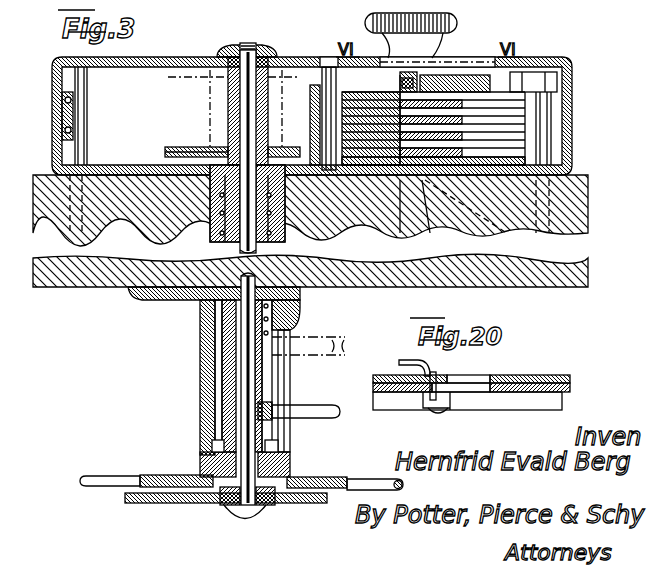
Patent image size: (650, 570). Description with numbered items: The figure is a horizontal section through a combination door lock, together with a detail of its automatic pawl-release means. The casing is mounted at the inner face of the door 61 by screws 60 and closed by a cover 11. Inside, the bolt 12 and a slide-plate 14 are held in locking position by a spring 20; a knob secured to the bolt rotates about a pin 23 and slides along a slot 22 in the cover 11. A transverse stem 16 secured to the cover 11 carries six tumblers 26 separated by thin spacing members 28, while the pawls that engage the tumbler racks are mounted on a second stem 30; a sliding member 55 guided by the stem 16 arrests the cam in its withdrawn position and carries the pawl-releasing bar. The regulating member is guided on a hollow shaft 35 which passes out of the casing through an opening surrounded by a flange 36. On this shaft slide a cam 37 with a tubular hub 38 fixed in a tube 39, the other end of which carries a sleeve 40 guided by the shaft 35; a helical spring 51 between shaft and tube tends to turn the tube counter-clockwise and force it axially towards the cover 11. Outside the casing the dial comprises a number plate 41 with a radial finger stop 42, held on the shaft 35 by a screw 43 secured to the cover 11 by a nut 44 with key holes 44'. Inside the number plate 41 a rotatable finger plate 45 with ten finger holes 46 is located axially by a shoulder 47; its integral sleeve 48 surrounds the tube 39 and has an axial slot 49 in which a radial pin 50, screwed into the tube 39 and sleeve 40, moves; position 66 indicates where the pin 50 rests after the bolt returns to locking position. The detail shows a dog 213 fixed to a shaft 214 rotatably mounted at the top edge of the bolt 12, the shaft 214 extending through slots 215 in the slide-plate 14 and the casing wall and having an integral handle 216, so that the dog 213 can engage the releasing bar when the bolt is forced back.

In FIG. 3, the door 61 is at (50, 175).
In FIG. 3, the screws 60 is at (86, 96).
In FIG. 3, the spring 20 is at (528, 82).
In FIG. 3, the slot 22 is at (470, 66).
In FIG. 3, the pin 23 is at (418, 72).
In FIG. 3, the stem 16 is at (326, 70).
In FIG. 3, the flange 36 is at (271, 212).
In FIG. 3, the shaft 35 is at (228, 99).
In FIG. 3, the key holes 44' is at (247, 36).
In FIG. 3, the nut 44 is at (269, 41).
In FIG. 3, the cam 37 is at (182, 147).
In FIG. 3, the tubular hub 38 is at (175, 157).
In FIG. 3, the spacing members 28 is at (402, 219).
In FIG. 3, the tumblers 26 is at (430, 233).
In FIG. 3, the sliding member 55 is at (467, 230).
In FIG. 3, the stem 30 is at (526, 219).
In FIG. 3, the sleeve 48 is at (205, 350).
In FIG. 3, the helical spring 51 is at (290, 311).
In FIG. 3, the tube 39 is at (207, 368).
In FIG. 3, the screw 43 is at (222, 392).
In FIG. 3, the sleeve 40 is at (213, 420).
In FIG. 3, the axial slot 49 is at (290, 375).
In FIG. 3, the pin position 66 is at (341, 346).
In FIG. 3, the pin 50 is at (318, 410).
In FIG. 3, the shoulder 47 is at (279, 430).
In FIG. 3, the rotatable plate 45 is at (165, 475).
In FIG. 3, the finger stop 42 is at (140, 480).
In FIG. 3, the finger holes 46 is at (364, 478).
In FIG. 3, the circular plate 41 is at (306, 493).
In FIG. 20, the cover 11 is at (505, 385).
In FIG. 20, the slide-plate 14 is at (504, 396).
In FIG. 20, the slots 215 is at (480, 379).
In FIG. 20, the bolt 12 is at (525, 401).
In FIG. 20, the shaft 214 is at (436, 378).
In FIG. 20, the handle 216 is at (415, 360).
In FIG. 20, the dog 213 is at (446, 404).